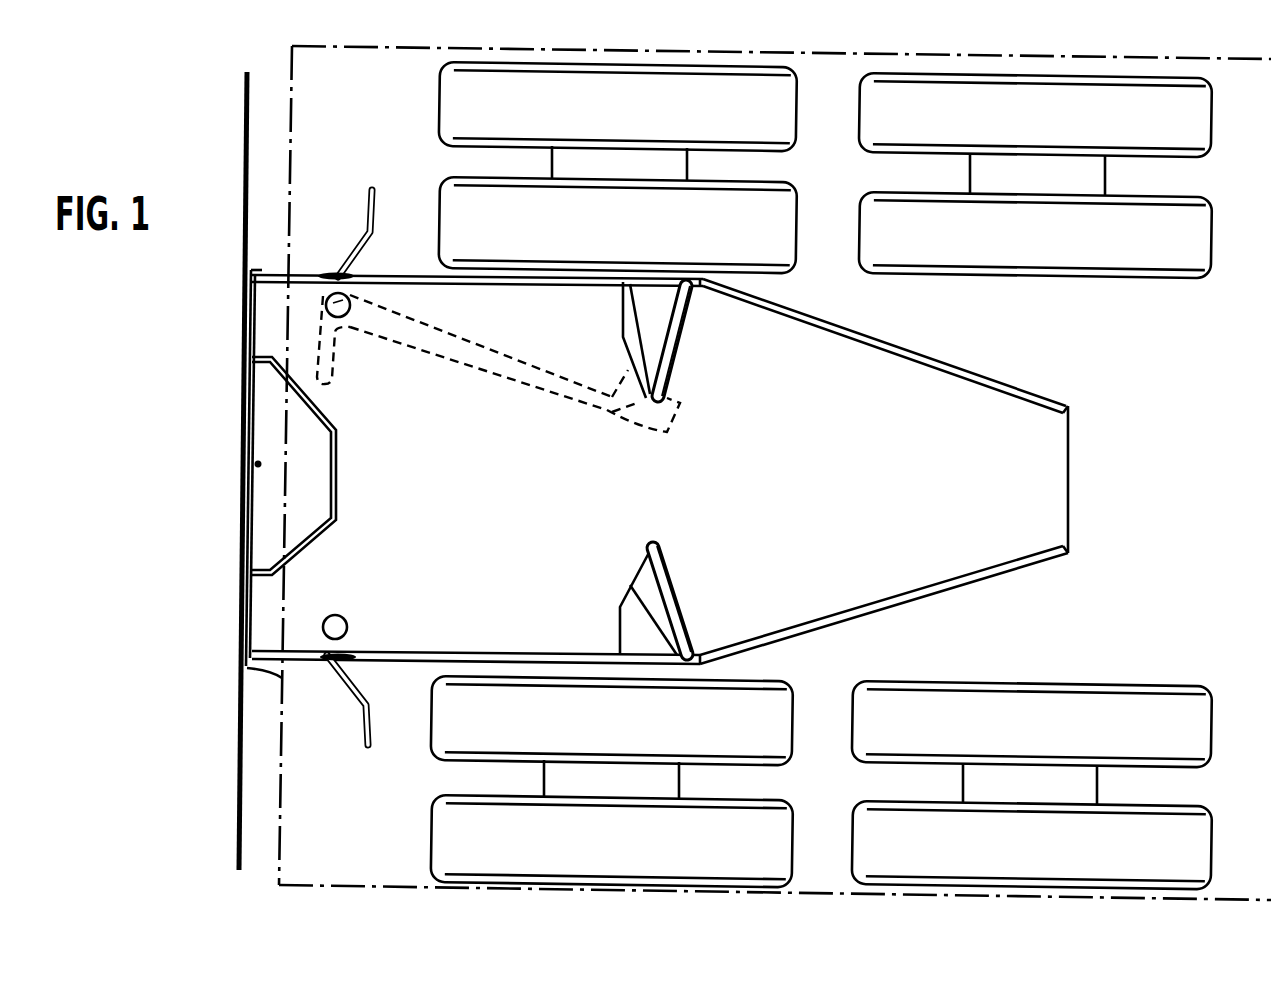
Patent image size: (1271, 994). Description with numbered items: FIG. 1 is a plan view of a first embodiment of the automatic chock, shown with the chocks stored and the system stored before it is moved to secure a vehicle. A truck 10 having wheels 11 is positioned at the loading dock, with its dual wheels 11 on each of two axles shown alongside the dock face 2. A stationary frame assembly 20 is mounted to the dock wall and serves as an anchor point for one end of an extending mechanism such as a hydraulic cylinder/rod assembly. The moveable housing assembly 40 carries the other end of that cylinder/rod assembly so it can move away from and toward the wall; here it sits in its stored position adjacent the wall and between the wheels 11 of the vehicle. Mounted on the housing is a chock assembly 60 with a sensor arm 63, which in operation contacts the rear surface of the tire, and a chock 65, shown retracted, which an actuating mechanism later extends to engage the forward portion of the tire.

The dock face 2 is at (243, 767).
The truck 10 is at (277, 867).
The wheels 11 is at (435, 205).
The stationary frame assembly 20 is at (340, 478).
The moveable housing assembly 40 is at (1068, 490).
The chock assembly 60 is at (530, 402).
The sensor arm 63 is at (363, 223).
The chock 65 is at (693, 320).